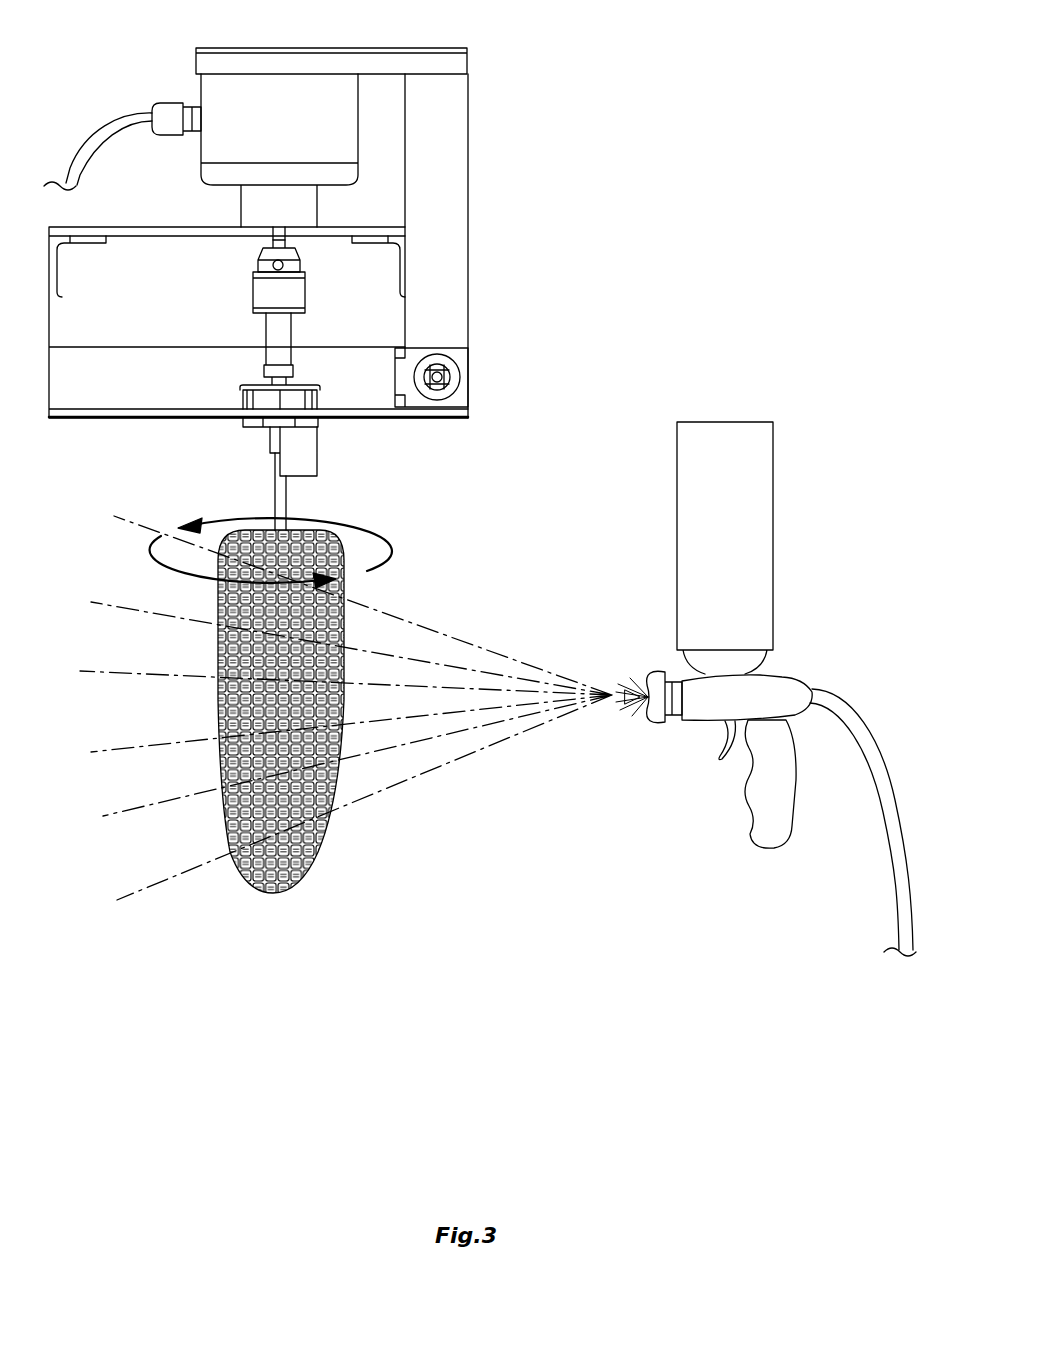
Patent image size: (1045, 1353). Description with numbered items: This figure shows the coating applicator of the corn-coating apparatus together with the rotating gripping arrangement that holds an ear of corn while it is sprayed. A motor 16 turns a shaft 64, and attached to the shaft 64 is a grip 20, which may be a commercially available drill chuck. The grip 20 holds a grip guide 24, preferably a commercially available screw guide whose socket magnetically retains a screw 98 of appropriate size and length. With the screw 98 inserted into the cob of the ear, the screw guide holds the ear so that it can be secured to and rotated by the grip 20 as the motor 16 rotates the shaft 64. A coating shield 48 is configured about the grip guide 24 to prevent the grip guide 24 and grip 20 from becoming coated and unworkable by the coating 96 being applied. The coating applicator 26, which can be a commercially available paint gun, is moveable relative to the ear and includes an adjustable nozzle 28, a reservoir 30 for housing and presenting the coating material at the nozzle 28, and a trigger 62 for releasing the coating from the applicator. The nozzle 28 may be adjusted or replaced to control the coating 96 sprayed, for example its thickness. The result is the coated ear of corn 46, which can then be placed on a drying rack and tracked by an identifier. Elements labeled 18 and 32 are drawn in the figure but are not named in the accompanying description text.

The motor 16 is at (201, 94).
The motor 18 is at (213, 147).
The grip 20 is at (297, 266).
The grip guide 24 is at (268, 328).
The coating applicator 26 is at (800, 676).
The nozzle 28 is at (655, 717).
The reservoir 30 is at (690, 478).
The power cable 32 is at (103, 117).
The coated ear of corn 46 is at (222, 708).
The coating shield 48 is at (313, 462).
The trigger 62 is at (720, 740).
The shaft 64 is at (270, 243).
The coating 96 is at (438, 780).
The screw 98 is at (275, 495).